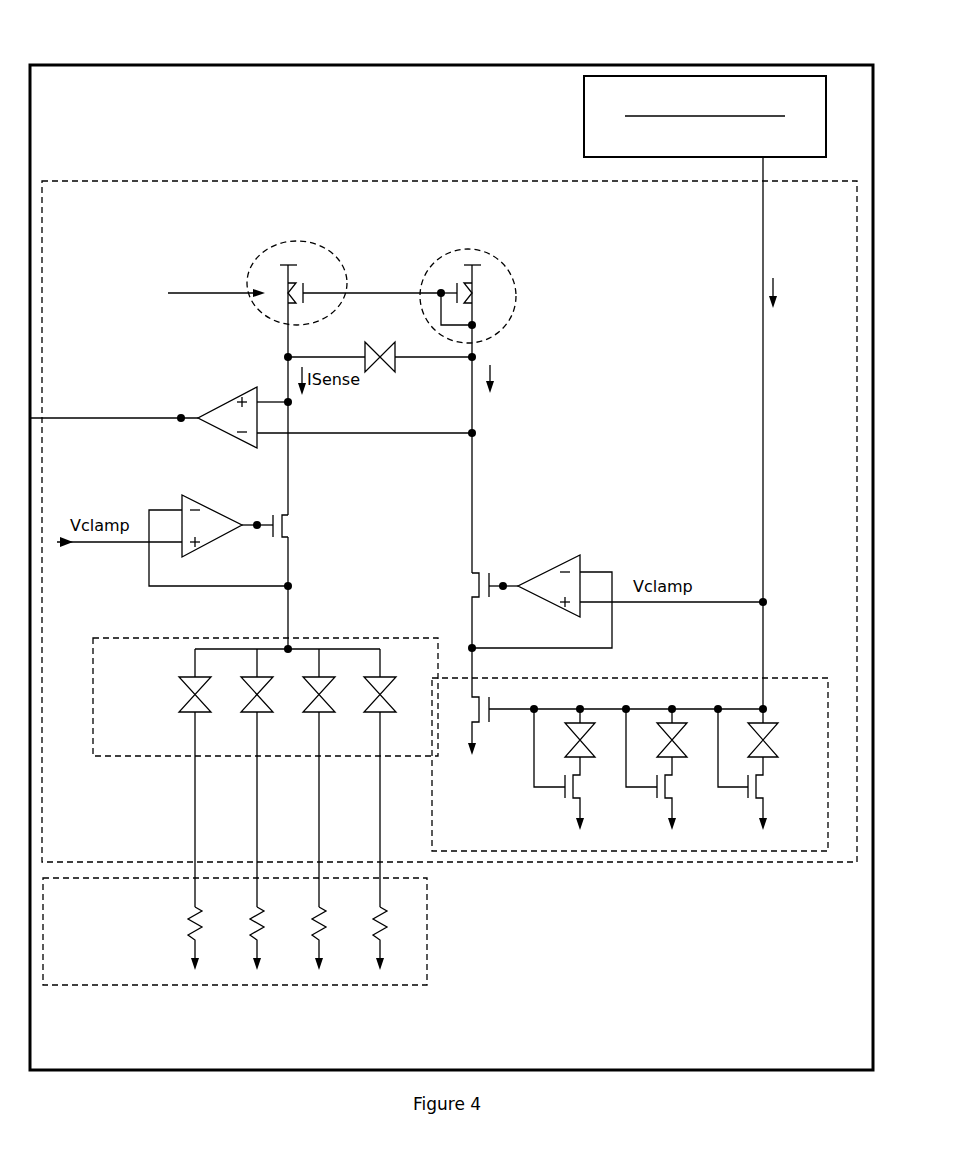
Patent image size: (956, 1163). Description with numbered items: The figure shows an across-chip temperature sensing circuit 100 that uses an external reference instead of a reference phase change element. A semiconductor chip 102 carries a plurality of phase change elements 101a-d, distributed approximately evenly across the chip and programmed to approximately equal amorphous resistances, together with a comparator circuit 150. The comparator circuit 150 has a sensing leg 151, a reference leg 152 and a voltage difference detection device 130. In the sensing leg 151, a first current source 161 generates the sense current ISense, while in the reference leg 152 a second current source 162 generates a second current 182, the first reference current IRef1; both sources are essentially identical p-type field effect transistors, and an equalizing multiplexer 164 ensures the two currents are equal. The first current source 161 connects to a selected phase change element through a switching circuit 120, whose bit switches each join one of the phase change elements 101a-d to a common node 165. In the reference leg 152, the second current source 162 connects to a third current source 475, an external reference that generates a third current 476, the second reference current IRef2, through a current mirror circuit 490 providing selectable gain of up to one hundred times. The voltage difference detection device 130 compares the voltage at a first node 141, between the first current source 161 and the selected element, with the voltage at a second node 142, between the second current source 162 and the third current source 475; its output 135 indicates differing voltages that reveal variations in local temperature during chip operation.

The across-chip temperature sensing circuit 100 is at (97, 36).
The semiconductor chip 102 is at (508, 68).
The comparator circuit 150 is at (419, 174).
The sensing leg 151 is at (344, 356).
The reference leg 152 is at (454, 385).
The first current source 161 is at (340, 269).
The second current source 162 is at (515, 292).
The equalizing multiplexer 164 is at (378, 341).
The comparator output 135 is at (186, 415).
The voltage difference detection device 130 is at (281, 422).
The first node 141 is at (291, 405).
The second node 142 is at (475, 432).
The second current 182 is at (545, 377).
The node 165 is at (291, 642).
The switching circuit 120 is at (137, 757).
The phase change elements 101a-d is at (162, 987).
The third current source 475 is at (692, 136).
The third current 476 is at (805, 308).
The current mirror circuit 490 is at (555, 852).